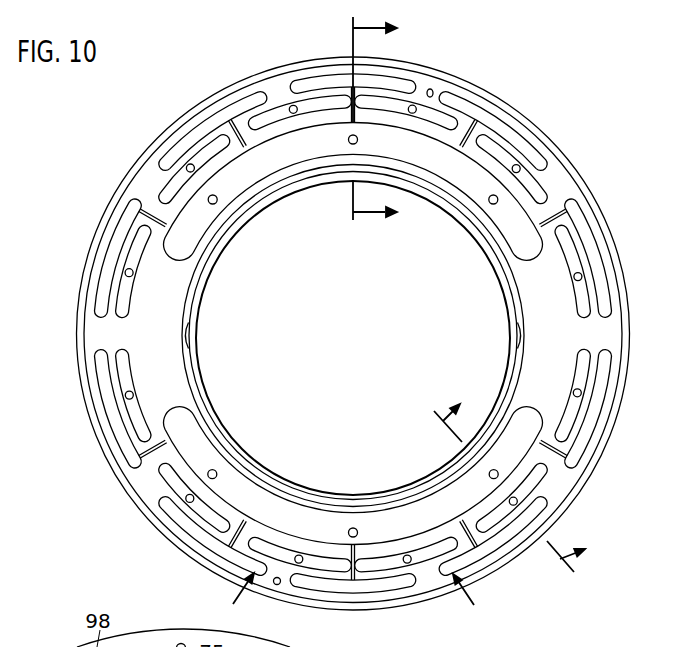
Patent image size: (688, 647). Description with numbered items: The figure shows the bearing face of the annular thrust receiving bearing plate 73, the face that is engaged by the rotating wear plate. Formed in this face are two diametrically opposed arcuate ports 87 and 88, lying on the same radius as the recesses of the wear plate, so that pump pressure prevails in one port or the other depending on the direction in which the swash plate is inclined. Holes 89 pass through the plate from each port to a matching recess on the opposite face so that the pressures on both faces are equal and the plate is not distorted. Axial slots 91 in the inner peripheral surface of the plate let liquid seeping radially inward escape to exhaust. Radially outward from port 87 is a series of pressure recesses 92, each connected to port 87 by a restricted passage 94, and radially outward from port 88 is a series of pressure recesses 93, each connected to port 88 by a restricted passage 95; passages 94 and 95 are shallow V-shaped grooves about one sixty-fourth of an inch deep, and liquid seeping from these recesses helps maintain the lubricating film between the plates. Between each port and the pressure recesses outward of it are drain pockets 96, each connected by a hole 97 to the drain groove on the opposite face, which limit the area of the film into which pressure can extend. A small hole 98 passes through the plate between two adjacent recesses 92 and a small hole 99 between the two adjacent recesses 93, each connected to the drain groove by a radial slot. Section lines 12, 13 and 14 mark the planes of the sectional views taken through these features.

The thrust receiving bearing plate 73 is at (58, 318).
The arcuate port 87 is at (186, 254).
The arcuate port 88 is at (196, 438).
The hole 89 is at (217, 196).
The axial slot 91 is at (194, 337).
The pressure recess 92 is at (316, 82).
The pressure recess 93 is at (107, 396).
The restricted passage 94 is at (348, 116).
The restricted passage 95 is at (156, 441).
The drain pocket 96 is at (168, 193).
The hole 97 is at (134, 276).
The small hole 98 is at (436, 92).
The small hole 99 is at (279, 586).
The section line 12- 12 is at (520, 477).
The section line 13- 13 is at (392, 121).
The section line 14- 14 is at (355, 604).